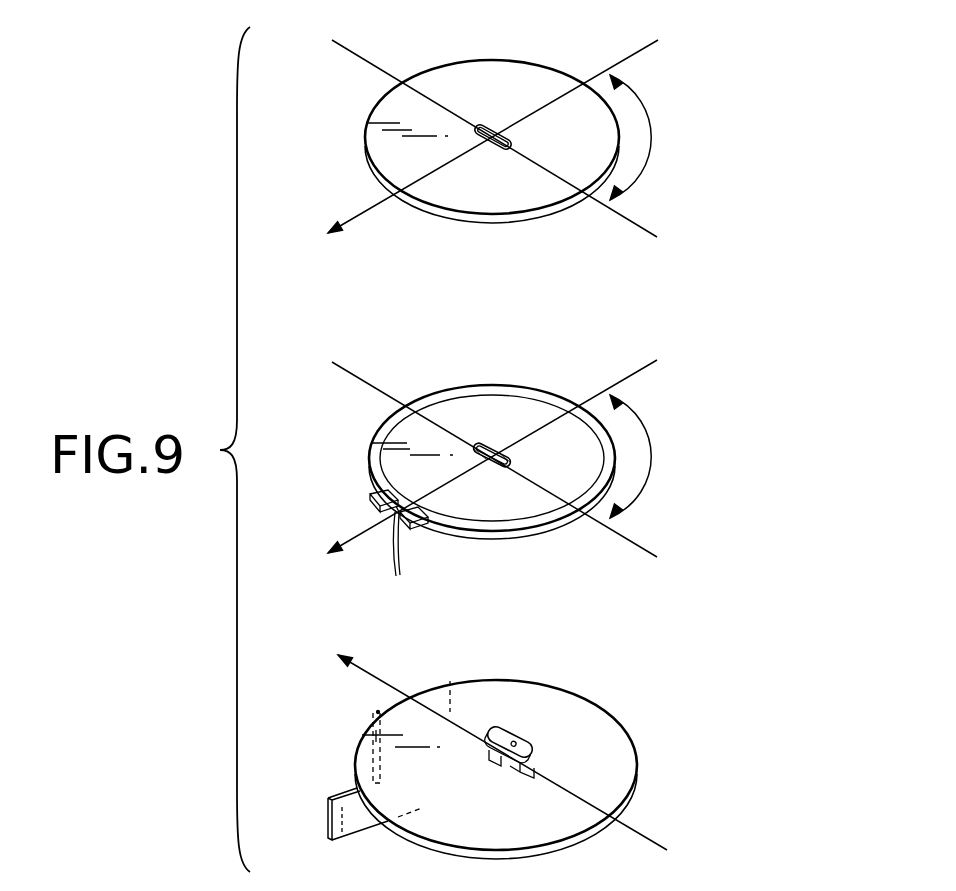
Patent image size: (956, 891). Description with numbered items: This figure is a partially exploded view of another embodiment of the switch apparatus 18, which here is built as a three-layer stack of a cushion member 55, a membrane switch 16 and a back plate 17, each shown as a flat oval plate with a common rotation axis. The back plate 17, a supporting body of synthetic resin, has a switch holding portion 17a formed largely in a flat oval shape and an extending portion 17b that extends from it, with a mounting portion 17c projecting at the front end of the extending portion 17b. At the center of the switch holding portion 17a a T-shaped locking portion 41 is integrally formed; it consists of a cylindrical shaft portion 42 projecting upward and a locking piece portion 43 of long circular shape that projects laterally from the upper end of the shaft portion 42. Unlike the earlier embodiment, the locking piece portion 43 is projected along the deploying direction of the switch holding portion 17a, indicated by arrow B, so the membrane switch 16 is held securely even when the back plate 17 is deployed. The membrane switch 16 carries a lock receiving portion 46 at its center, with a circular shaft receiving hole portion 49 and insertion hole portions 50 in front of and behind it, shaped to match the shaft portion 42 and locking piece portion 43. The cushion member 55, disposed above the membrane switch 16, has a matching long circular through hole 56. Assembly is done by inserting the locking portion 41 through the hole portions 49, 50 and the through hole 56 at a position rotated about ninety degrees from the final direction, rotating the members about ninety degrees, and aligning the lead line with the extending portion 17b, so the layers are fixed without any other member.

The switch apparatus 18 is at (688, 50).
The cushion member 55 is at (526, 62).
The through hole 56 is at (507, 148).
The membrane switch 16 is at (537, 387).
The lock receiving portion 46 is at (483, 445).
The shaft receiving hole portion 49 is at (487, 468).
The insertion hole portion 50 is at (500, 470).
The back plate 17 is at (563, 683).
The switch holding portion 17a is at (615, 773).
The extending portion 17b is at (378, 712).
The mounting portion 17c is at (348, 802).
The locking portion 41 is at (487, 748).
The shaft portion 42 is at (505, 767).
The locking piece portion 43 is at (500, 732).